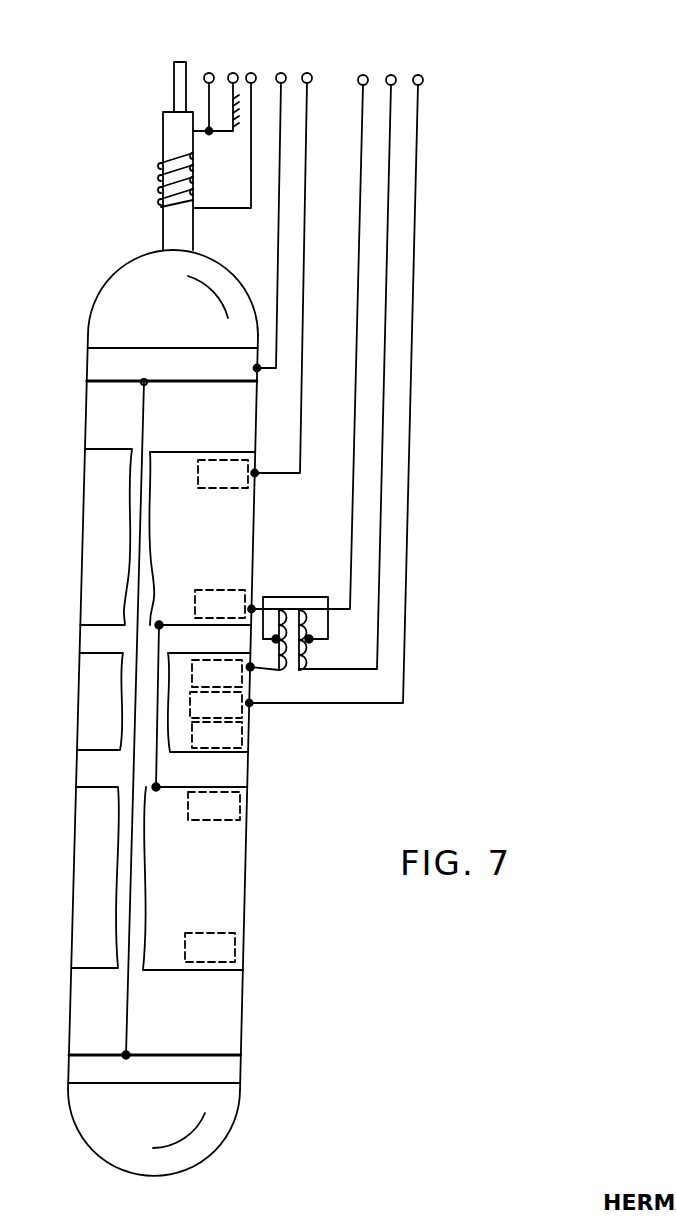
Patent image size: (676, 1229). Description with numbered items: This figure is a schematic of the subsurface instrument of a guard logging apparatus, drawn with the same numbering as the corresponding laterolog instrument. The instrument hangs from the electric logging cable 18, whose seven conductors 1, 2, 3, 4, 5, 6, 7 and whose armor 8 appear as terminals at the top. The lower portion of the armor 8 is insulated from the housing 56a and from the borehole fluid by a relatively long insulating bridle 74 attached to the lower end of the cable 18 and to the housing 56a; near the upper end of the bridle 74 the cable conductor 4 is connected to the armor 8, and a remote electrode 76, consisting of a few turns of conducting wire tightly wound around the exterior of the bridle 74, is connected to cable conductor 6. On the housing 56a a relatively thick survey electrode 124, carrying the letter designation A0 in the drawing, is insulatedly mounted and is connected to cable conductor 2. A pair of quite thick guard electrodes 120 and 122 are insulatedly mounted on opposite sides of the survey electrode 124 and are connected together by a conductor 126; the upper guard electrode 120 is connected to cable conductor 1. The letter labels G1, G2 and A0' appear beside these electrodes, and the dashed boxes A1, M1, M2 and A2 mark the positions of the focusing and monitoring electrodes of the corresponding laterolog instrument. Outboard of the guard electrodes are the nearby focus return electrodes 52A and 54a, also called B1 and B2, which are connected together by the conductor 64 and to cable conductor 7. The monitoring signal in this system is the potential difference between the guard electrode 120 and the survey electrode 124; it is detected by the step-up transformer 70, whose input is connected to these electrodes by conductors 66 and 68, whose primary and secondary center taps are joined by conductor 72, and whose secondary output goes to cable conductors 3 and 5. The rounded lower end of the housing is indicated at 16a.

The electric logging cable 18 is at (172, 71).
The cable armor 8 is at (230, 92).
The cable conductor 4 is at (203, 92).
The cable conductor 6 is at (224, 129).
The cable conductor 7 is at (270, 211).
The cable conductor 1 is at (282, 263).
The cable conductor 3 is at (308, 332).
The cable conductor 5 is at (347, 360).
The cable conductor 2 is at (334, 379).
The remote electrode 76 is at (160, 197).
The insulating bridle 74 is at (162, 226).
The upper nearby focus return electrode B1 is at (87, 363).
The nearby focus return electrode 52A is at (259, 374).
The conductor 64 is at (145, 436).
The first grid G1 is at (83, 537).
The guard electrode 120 is at (259, 553).
The focusing electrode designation A1 is at (223, 474).
The monitoring electrode designation M2 is at (216, 705).
The conductor 66 is at (276, 604).
The conductor 72 is at (317, 598).
The conductor 68 is at (330, 697).
The step-up transformer 70 is at (300, 638).
The conductor 126 is at (170, 641).
The central electrode A0' is at (76, 701).
The survey electrode 124 is at (250, 738).
The monitoring electrode designation M1 is at (217, 704).
The central anode A0 is at (216, 705).
The guard electrode 122 is at (249, 829).
The focusing electrode designation A2 is at (210, 947).
The second grid G2 is at (72, 891).
The housing 56a is at (243, 1012).
The lower nearby focus return electrode B2 is at (68, 1066).
The nearby focus return electrode 54a is at (241, 1077).
The envelope end 16a is at (233, 1131).